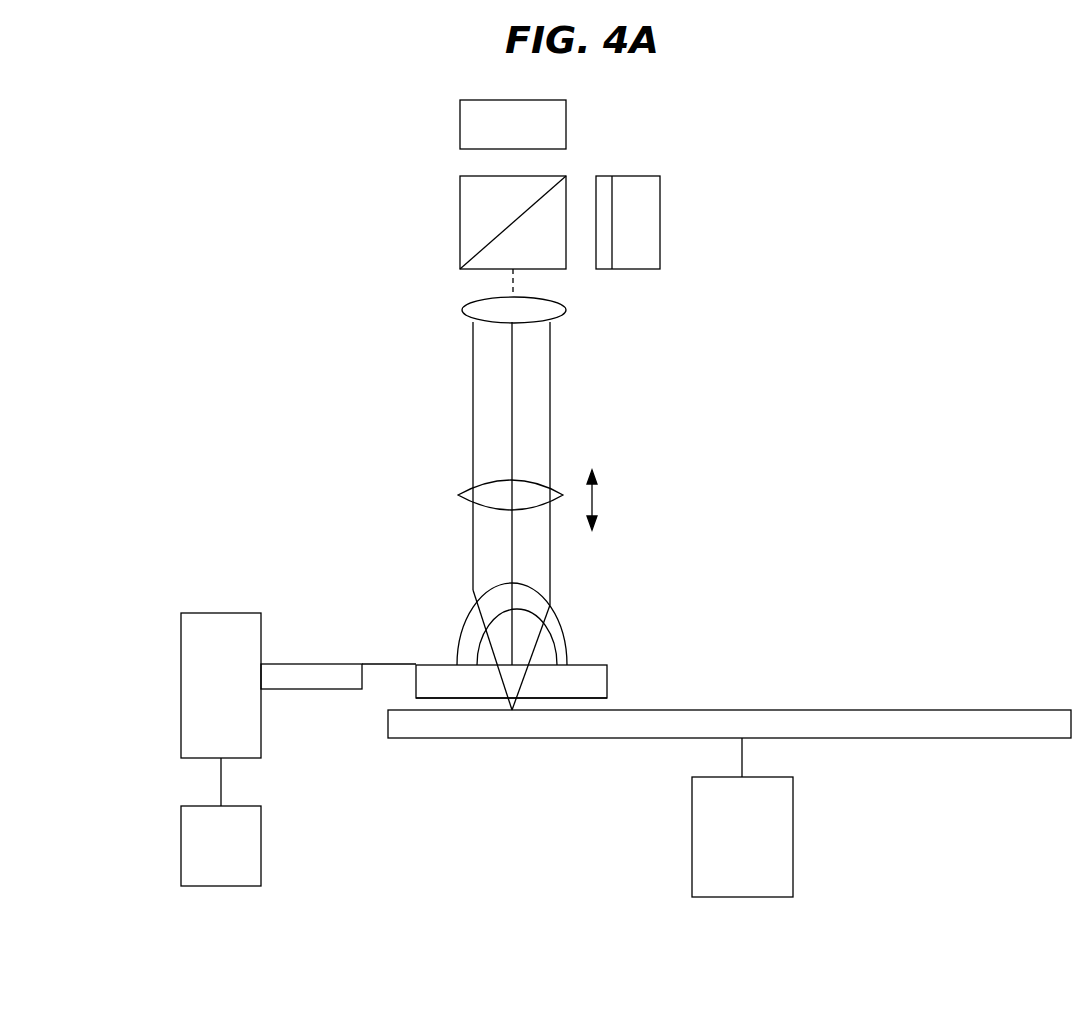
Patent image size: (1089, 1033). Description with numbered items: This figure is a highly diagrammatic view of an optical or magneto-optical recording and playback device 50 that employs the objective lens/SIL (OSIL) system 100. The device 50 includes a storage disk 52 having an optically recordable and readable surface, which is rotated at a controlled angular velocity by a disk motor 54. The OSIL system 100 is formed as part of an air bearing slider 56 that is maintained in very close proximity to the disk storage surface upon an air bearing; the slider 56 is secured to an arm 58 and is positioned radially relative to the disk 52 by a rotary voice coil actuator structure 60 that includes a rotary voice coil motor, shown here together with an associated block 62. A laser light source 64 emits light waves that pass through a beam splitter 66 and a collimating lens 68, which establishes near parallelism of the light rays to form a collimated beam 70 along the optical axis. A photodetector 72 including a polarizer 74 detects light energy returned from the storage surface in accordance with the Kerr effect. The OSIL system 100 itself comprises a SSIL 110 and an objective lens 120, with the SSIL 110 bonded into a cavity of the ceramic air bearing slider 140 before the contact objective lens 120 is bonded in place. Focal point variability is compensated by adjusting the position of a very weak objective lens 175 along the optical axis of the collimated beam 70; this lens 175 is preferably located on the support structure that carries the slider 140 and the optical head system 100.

The optical or magneto-optical recording device 50 is at (477, 799).
The storage disk 52 is at (873, 718).
The disk motor 54 is at (793, 850).
The air bearing slider 56 is at (443, 698).
The arm 58 is at (307, 670).
The rotary voice coil actuator structure 60 is at (181, 685).
The controller 62 is at (181, 830).
The light source 64 is at (566, 129).
The beam splitter 66 is at (460, 218).
The collimating lens 68 is at (462, 310).
The collimated beam 70 is at (442, 459).
The photodetector 72 is at (660, 225).
The polarizer 74 is at (600, 270).
The objective lens/SIL (OSIL) system 100 is at (623, 580).
The SSIL 110 is at (565, 653).
The objective lens 120 is at (490, 610).
The air bearing slider 140 is at (607, 685).
The very weak objective lens (WOL) 175 is at (458, 495).